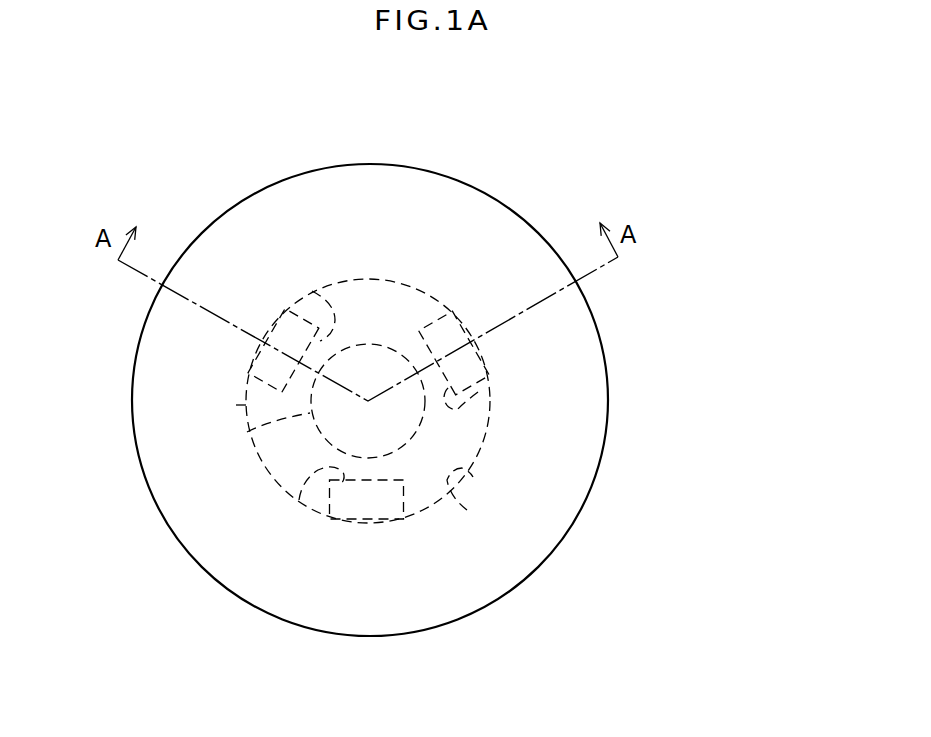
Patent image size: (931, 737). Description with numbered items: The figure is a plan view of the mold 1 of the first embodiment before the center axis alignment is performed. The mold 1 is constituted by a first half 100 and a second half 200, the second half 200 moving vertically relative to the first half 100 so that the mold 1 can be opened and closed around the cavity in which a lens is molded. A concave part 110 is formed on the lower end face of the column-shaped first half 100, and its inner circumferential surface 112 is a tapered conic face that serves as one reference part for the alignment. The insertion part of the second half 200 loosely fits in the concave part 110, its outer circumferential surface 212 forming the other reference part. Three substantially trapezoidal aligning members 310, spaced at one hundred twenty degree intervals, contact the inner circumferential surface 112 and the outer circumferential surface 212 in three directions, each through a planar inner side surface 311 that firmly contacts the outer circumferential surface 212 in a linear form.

The mold 1 is at (605, 178).
The first half 100 is at (165, 527).
The concave part 110 is at (243, 405).
The inner circumferential surface 112 is at (467, 510).
The second half 200 is at (422, 427).
The outer circumferential surface 212 is at (247, 432).
The aligning member 310 is at (262, 366).
The inner side surface 311 is at (312, 291).